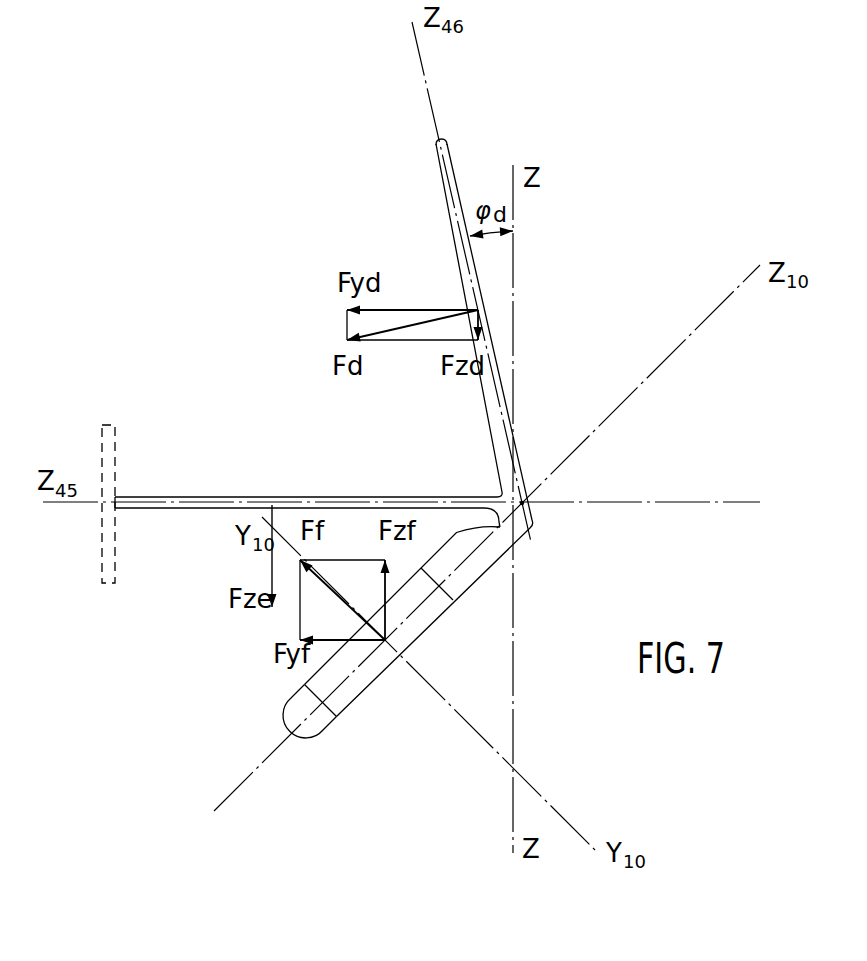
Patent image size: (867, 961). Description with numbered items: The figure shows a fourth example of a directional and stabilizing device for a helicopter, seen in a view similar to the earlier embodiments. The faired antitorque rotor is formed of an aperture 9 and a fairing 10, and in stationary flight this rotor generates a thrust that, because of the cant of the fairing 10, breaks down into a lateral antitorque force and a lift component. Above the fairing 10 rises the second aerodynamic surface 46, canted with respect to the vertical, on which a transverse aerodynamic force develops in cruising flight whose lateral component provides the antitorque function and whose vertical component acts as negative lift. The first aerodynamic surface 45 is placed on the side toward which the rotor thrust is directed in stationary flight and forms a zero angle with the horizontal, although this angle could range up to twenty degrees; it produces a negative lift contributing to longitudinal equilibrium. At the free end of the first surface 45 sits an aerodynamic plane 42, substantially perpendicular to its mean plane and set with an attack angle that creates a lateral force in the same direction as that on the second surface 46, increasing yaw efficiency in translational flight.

The second aerodynamic surface 46 is at (448, 161).
The first aerodynamic surface 45 is at (232, 497).
The aerodynamic plane 42 is at (108, 424).
The aperture 9 is at (421, 628).
The fairing 10 is at (322, 731).